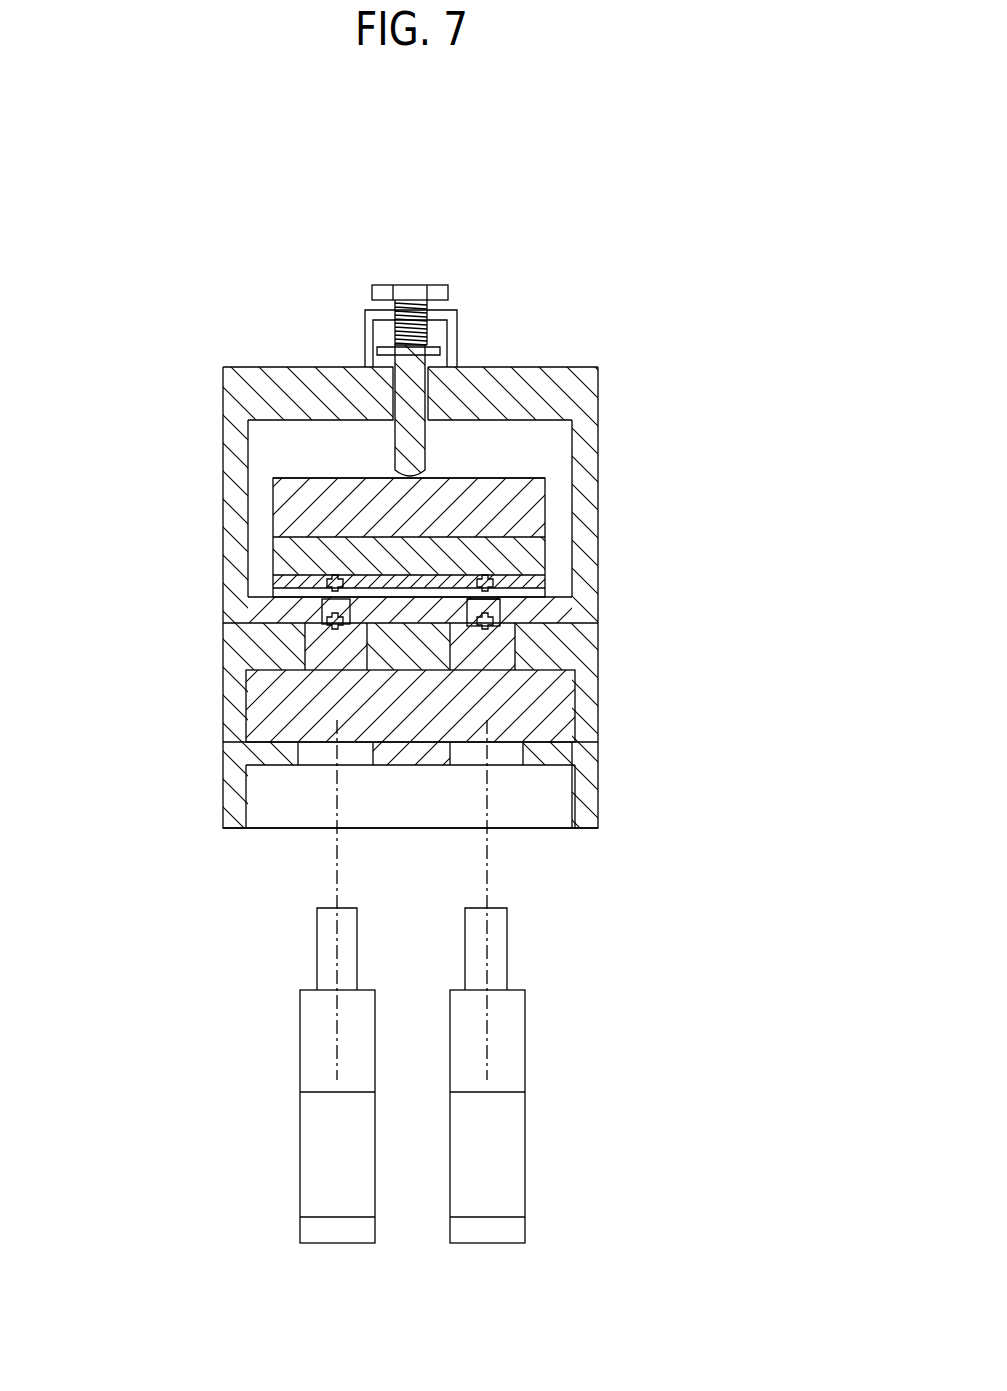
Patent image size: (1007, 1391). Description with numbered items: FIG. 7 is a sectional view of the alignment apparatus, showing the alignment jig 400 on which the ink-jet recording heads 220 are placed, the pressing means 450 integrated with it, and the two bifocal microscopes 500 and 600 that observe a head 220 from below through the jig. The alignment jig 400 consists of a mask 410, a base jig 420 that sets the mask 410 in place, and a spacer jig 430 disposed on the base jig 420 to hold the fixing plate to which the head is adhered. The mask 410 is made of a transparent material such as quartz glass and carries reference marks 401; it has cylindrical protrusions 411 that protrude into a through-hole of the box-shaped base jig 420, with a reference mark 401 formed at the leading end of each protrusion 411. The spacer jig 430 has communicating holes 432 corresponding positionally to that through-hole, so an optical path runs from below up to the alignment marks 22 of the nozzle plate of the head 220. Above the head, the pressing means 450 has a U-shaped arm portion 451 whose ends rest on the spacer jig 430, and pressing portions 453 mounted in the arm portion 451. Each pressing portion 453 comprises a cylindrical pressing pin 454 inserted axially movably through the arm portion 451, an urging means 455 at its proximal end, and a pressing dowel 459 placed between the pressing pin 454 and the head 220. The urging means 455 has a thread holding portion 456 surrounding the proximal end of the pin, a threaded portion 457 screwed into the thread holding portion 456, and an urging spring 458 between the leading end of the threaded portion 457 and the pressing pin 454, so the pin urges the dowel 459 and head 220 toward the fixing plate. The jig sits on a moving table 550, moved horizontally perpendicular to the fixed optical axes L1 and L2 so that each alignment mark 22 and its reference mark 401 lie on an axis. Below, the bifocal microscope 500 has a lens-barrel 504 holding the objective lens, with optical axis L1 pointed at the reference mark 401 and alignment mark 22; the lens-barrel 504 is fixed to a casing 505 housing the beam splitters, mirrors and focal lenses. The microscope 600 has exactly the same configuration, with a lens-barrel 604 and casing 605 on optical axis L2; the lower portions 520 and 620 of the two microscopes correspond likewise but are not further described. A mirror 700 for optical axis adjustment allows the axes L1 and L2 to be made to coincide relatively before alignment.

The alignment jig 400 is at (610, 332).
The pressing means 450 is at (213, 390).
The arm portion 451 is at (290, 370).
The pressing portion 453 is at (548, 168).
The pressing pin 454 is at (450, 322).
The urging means 455 is at (440, 270).
The thread holding portion 456 is at (365, 288).
The threaded portion 457 is at (398, 288).
The urging spring 458 is at (365, 320).
The pressing dowel 459 is at (492, 520).
The ink-jet recording head 220 is at (270, 527).
The alignment mark 22 is at (277, 571).
The reference mark 401 is at (492, 578).
The spacer jig 430 is at (247, 612).
The communicating hole 432 is at (247, 638).
The protrusion 411 is at (243, 682).
The base jig 420 is at (614, 650).
The mask 410 is at (243, 718).
The moving table 550 is at (590, 773).
The mirror 700 is at (482, 607).
The optical axis L2 is at (337, 855).
The optical axis L1 is at (487, 850).
The bifocal microscope 600 is at (233, 1042).
The lens-barrel 604 is at (317, 930).
The casing 605 is at (300, 1068).
The lamp terminal 620 is at (355, 1200).
The bifocal microscope 500 is at (637, 1052).
The lens-barrel 504 is at (507, 955).
The casing 505 is at (523, 1067).
The lamp terminal 520 is at (505, 1200).